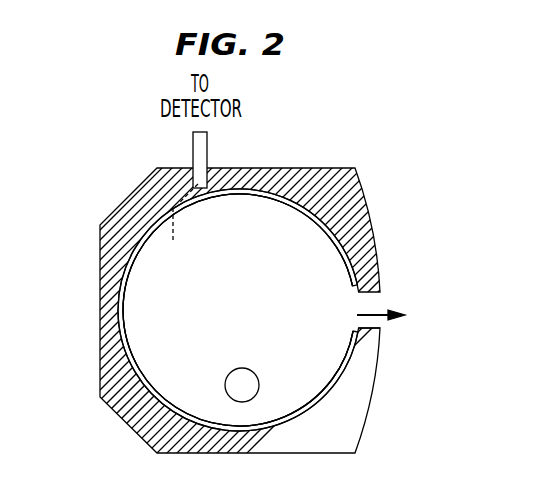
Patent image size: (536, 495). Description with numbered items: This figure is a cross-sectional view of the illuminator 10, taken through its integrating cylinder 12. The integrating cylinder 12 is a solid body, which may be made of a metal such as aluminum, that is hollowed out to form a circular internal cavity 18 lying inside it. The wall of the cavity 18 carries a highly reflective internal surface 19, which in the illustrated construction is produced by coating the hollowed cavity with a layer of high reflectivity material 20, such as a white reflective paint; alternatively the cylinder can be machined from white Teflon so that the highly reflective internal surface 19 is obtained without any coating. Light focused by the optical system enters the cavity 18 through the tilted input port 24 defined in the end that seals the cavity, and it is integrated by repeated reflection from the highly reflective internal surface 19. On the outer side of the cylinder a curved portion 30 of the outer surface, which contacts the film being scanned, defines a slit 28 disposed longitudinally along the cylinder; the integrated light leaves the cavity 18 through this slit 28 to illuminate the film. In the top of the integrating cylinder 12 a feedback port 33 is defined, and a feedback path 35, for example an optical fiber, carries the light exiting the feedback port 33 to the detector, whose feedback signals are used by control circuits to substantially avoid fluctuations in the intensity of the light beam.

The illuminator 10 is at (130, 140).
The integrating cylinder 12 is at (232, 178).
The circular internal cavity 18 is at (283, 220).
The highly reflective internal surface 19 is at (322, 223).
The layer of high reflectivity material 20 is at (348, 262).
The tilted input port 24 is at (225, 388).
The slit 28 is at (374, 315).
The curved portion 30 is at (366, 379).
The feedback port 33 is at (181, 229).
The feedback path 35 is at (193, 147).